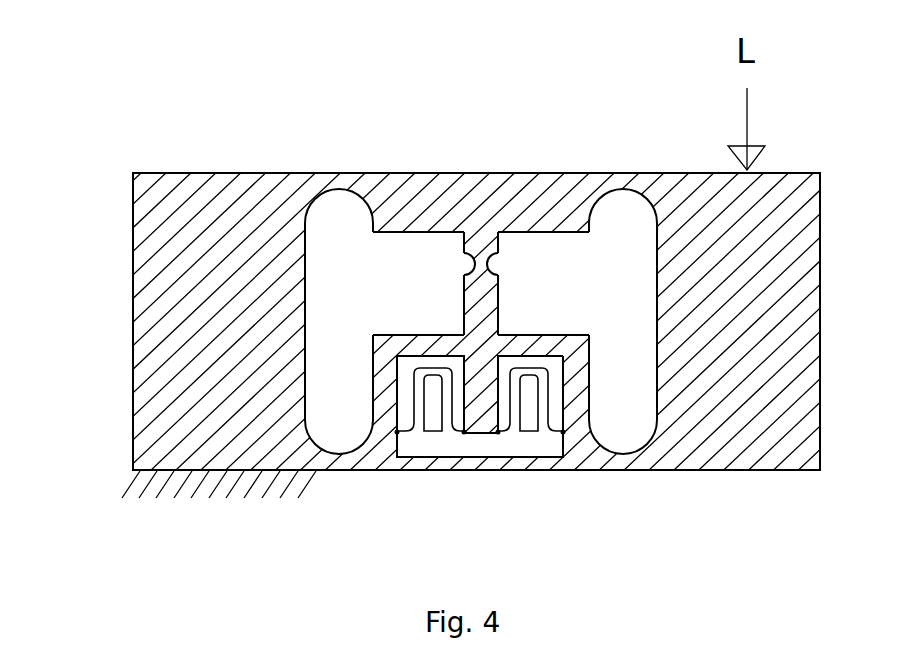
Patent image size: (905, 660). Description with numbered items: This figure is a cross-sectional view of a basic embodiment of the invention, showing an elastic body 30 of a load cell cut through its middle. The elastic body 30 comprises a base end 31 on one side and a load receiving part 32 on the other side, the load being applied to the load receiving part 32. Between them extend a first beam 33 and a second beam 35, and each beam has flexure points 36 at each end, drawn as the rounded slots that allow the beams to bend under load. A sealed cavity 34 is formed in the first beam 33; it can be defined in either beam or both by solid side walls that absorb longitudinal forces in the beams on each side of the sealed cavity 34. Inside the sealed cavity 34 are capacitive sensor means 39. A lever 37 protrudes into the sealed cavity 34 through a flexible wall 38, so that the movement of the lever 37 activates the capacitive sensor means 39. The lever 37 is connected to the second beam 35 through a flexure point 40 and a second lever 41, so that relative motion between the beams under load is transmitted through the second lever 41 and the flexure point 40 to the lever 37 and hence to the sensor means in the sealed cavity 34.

The elastic body 30 is at (177, 173).
The base end 31 is at (133, 470).
The load receiving part 32 is at (780, 462).
The first beam 33 is at (372, 455).
The sealed cavity 34 is at (482, 445).
The second beam 35 is at (448, 198).
The flexure points 36 is at (337, 187).
The lever 37 is at (498, 318).
The flexible wall 38 is at (420, 333).
The capacitive sensor means 39 is at (434, 432).
The flexure point 40 is at (468, 267).
The second lever 41 is at (485, 240).